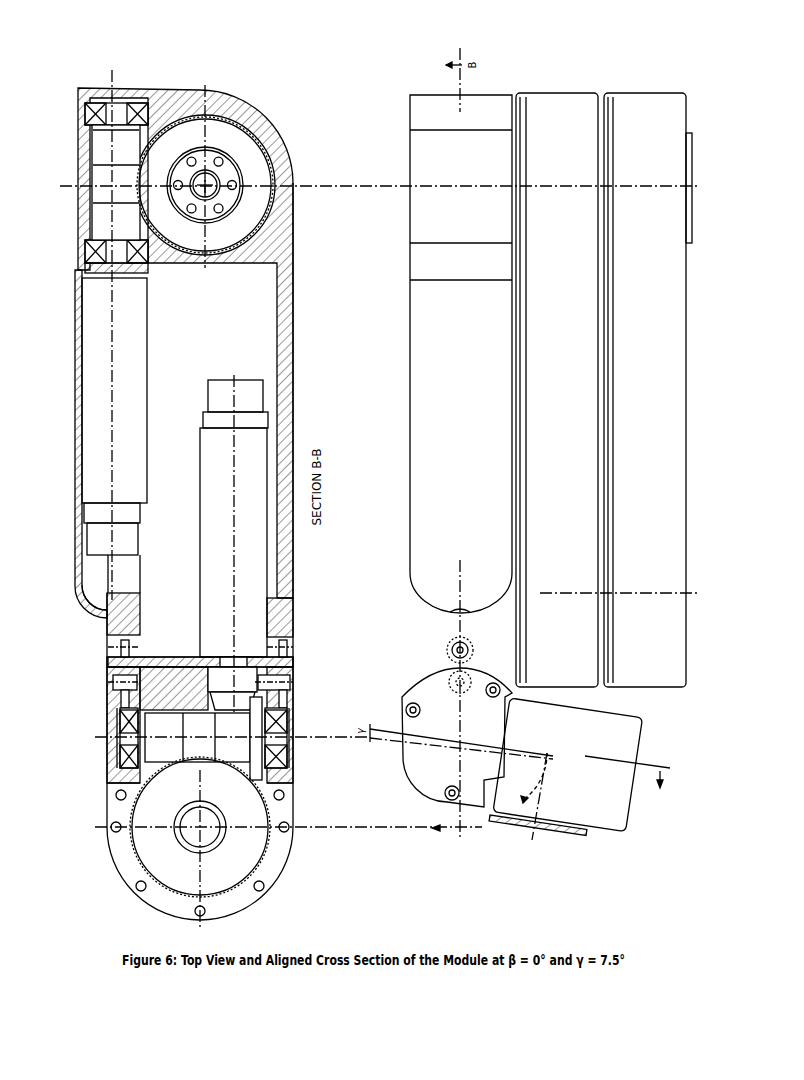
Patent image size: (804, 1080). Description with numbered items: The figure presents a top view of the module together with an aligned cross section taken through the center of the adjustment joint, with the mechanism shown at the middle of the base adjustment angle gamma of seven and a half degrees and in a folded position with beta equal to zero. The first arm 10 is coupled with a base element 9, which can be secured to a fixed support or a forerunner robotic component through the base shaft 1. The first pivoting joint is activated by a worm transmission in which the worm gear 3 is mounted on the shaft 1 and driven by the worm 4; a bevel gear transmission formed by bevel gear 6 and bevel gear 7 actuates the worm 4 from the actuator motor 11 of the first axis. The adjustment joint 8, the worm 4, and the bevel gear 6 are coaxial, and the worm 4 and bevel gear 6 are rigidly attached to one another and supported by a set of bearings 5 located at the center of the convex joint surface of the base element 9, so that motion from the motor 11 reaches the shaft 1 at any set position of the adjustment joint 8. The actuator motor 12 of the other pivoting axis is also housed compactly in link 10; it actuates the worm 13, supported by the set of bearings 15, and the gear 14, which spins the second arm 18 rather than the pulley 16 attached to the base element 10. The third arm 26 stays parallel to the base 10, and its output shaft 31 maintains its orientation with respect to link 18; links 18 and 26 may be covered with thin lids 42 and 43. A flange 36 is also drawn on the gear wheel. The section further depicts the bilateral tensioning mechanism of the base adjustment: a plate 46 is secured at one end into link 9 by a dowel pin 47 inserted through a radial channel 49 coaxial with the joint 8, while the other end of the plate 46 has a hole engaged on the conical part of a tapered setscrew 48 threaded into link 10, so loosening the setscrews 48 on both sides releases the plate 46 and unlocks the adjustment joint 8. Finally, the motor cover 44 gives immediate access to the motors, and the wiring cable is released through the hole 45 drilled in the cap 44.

The base shaft 1 is at (592, 828).
The worm gear 3 is at (140, 855).
The worm 4 is at (127, 743).
The set of bearings 5 is at (108, 722).
The bevel gear 6 is at (260, 733).
The bevel gear 7 is at (252, 702).
The adjustment joint 8 is at (137, 668).
The base element 9 is at (110, 773).
The first arm 10 is at (290, 603).
The actuator motor 11 is at (253, 557).
The actuator motor 12 is at (90, 460).
The worm 13 is at (98, 222).
The gear 14 is at (263, 190).
The set of bearings 15 is at (82, 258).
The pulley 16 is at (78, 117).
The second arm 18 is at (672, 653).
The third arm 26 is at (590, 538).
The output shaft 31 is at (690, 228).
The flange 36 is at (227, 203).
The thin lid 42 is at (523, 445).
The thin lid 43 is at (612, 502).
The motor cover 44 is at (77, 592).
The hole 45 is at (108, 611).
The plate 46 is at (108, 703).
The dowel pin 47 is at (108, 683).
The setscrew 48 is at (110, 643).
The radial channel 49 is at (443, 682).